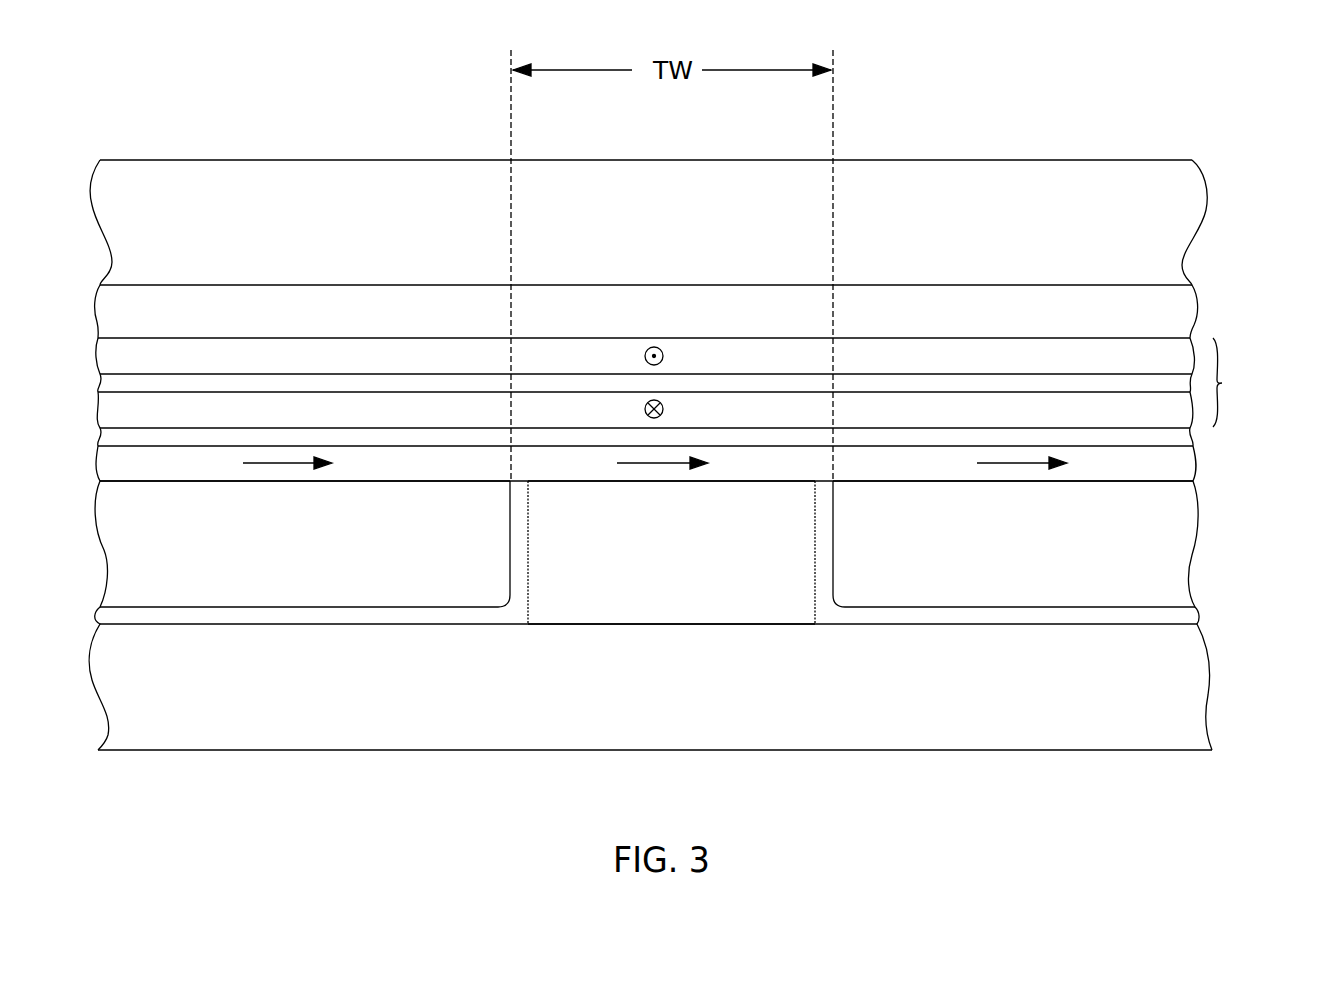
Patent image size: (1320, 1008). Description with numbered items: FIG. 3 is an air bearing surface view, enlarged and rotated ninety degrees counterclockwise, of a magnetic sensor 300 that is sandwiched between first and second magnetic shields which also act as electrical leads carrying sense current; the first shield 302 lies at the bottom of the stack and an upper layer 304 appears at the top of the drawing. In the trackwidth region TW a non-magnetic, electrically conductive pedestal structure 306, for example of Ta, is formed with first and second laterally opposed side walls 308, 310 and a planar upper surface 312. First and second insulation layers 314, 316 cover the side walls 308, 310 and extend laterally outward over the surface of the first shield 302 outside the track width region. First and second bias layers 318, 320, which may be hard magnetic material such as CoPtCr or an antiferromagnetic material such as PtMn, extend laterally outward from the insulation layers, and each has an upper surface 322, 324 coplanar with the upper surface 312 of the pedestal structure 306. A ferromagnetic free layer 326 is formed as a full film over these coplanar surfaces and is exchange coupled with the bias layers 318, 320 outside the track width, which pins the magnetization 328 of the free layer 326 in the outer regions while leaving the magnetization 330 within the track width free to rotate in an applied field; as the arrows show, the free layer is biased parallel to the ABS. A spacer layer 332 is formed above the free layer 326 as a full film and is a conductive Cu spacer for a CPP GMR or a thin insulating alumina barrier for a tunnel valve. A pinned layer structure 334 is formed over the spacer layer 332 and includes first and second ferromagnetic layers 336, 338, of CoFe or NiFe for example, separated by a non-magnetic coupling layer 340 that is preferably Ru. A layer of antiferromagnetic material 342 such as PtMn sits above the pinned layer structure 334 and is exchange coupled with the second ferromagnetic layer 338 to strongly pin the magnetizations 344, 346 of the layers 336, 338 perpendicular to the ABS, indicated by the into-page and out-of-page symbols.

The sensor 300 is at (1222, 519).
The first shield 302 is at (748, 690).
The overcoat layer 304 is at (1025, 228).
The pedestal structure 306 is at (727, 564).
The first side wall 308 is at (529, 567).
The second side wall 310 is at (815, 563).
The upper surface 312 is at (687, 483).
The first insulation layer 314 is at (860, 617).
The second insulation layer 316 is at (518, 552).
The first bias layer 318 is at (1100, 556).
The second bias layer 320 is at (276, 556).
The upper surface of first bias layer 322 is at (1080, 482).
The upper surface of second bias layer 324 is at (300, 481).
The ferromagnetic free layer 326 is at (952, 465).
The pinned magnetization of free layer 328 is at (277, 462).
The free magnetization of free layer 330 is at (650, 465).
The spacer layer 332 is at (1185, 433).
The pinned layer structure 334 is at (1225, 383).
The first ferromagnetic layer 336 is at (964, 413).
The second ferromagnetic layer 338 is at (958, 360).
The coupling layer 340 is at (1022, 389).
The antiferromagnetic layer 342 is at (962, 313).
The magnetization of first ferromagnetic layer 344 is at (644, 409).
The magnetization of second ferromagnetic layer 346 is at (644, 356).